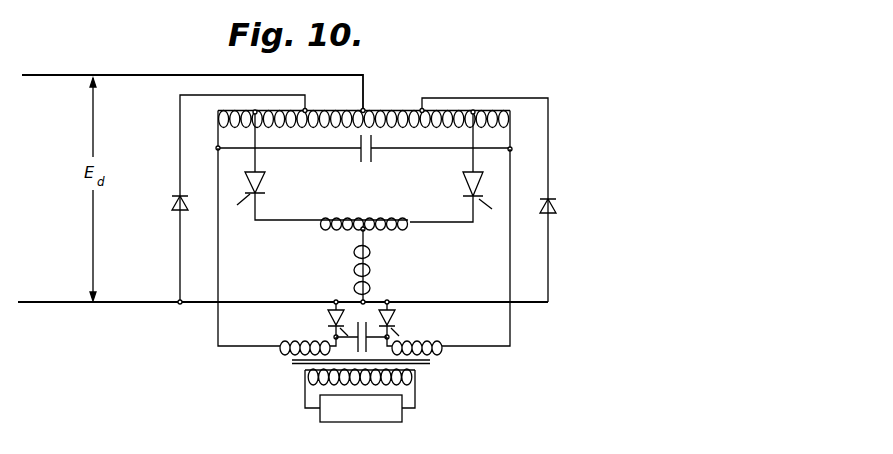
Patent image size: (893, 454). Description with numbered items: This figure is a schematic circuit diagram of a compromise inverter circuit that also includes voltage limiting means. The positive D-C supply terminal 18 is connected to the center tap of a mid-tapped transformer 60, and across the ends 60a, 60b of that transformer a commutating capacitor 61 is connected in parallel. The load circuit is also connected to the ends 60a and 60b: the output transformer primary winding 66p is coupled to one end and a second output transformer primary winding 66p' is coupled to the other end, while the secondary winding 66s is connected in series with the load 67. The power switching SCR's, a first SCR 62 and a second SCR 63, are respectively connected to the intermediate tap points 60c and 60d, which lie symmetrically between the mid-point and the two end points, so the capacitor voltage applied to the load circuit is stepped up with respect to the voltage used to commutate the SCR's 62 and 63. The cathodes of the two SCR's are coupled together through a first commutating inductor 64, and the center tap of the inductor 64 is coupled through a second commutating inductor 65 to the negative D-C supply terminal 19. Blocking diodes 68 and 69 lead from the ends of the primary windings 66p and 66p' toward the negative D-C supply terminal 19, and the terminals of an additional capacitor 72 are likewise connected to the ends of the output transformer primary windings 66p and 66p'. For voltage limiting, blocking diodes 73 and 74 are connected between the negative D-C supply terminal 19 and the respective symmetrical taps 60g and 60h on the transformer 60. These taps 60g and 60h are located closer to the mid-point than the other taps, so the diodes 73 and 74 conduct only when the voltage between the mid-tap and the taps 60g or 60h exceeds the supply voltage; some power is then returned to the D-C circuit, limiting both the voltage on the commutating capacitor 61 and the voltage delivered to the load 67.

The positive D-C supply terminal 18 is at (62, 74).
The negative D-C supply terminal 19 is at (64, 304).
The mid-tapped transformer 60 is at (376, 108).
The end of transformer winding 60a is at (217, 118).
The other end of transformer winding 60b is at (511, 118).
The intermediate tap point 60c is at (257, 124).
The intermediate tap point 60d is at (471, 125).
The symmetrical tap 60g is at (308, 110).
The symmetrical tap 60h is at (420, 108).
The commutating capacitor 61 is at (359, 152).
The first SCR 62 is at (262, 183).
The second SCR 63 is at (466, 184).
The first commutating inductor 64 is at (363, 210).
The second commutating inductor 65 is at (371, 258).
The output transformer primary winding 66p is at (277, 251).
The second output transformer primary winding 66p' is at (448, 252).
The secondary winding 66s is at (417, 377).
The load 67 is at (320, 414).
The blocking diode 68 is at (327, 322).
The blocking diode 69 is at (396, 322).
The additional capacitor 72 is at (368, 340).
The blocking diode 73 is at (170, 204).
The blocking diode 74 is at (557, 208).